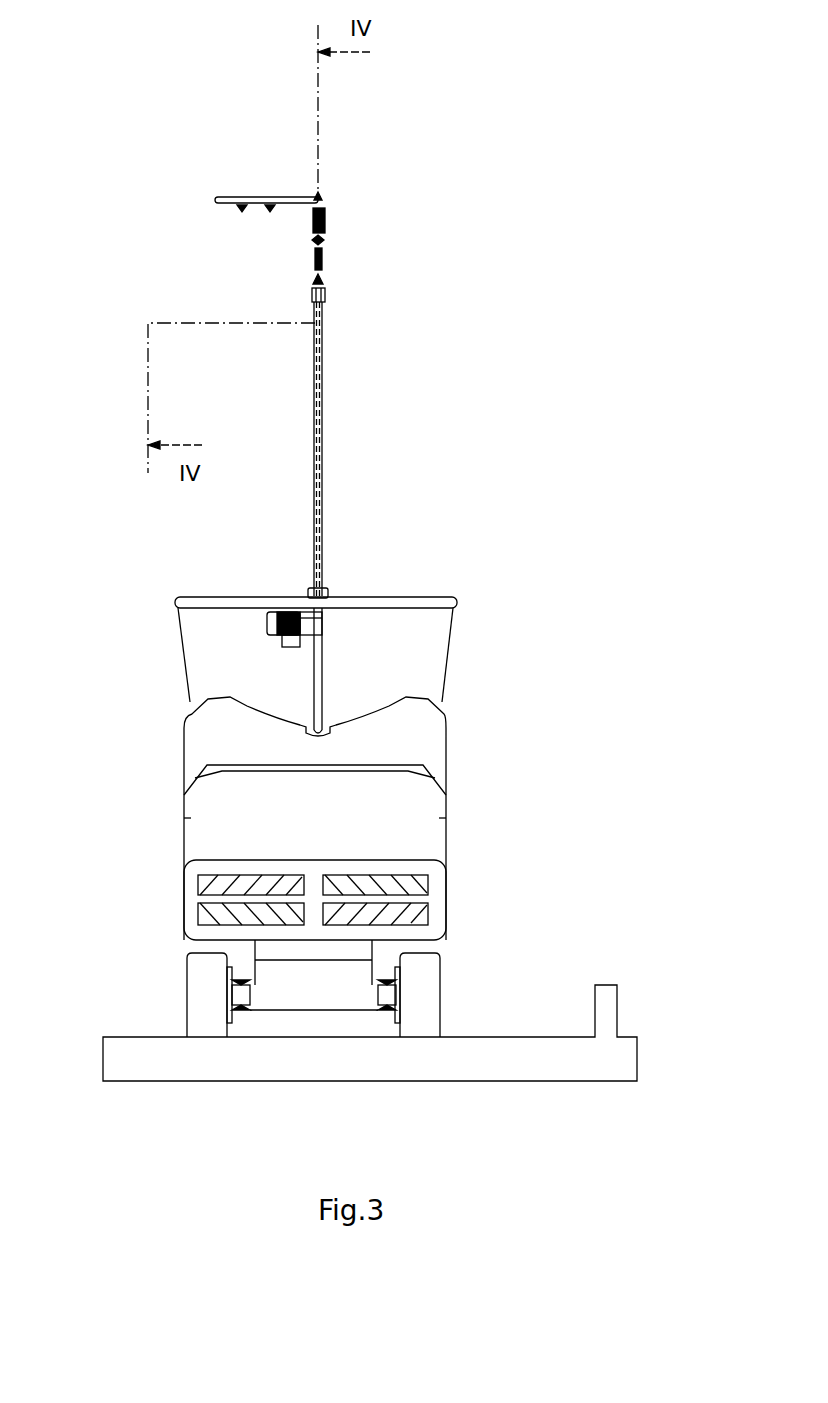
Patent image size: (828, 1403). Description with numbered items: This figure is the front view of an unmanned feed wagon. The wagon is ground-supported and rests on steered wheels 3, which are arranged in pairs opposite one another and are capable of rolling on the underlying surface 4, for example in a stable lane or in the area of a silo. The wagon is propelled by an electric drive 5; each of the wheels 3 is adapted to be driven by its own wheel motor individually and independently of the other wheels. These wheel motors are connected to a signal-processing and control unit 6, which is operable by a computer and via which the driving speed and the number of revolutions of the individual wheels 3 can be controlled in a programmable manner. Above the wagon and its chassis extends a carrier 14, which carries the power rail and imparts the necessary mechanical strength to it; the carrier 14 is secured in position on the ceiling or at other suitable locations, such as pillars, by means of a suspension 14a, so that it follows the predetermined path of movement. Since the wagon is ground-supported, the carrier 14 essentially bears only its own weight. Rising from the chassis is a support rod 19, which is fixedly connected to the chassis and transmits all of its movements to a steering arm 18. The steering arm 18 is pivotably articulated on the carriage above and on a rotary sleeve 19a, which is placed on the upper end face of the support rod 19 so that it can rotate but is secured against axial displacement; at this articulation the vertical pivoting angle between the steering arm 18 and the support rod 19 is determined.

The steered wheels 3 is at (187, 1000).
The underlying surface 4 is at (518, 1037).
The electric drive 5 is at (246, 1008).
The signal-processing and control unit 6 is at (486, 818).
The carrier 14 is at (326, 222).
The suspension 14a is at (272, 198).
The steering arm 18 is at (322, 268).
The support rod 19 is at (322, 405).
The rotary sleeve 19a is at (326, 300).